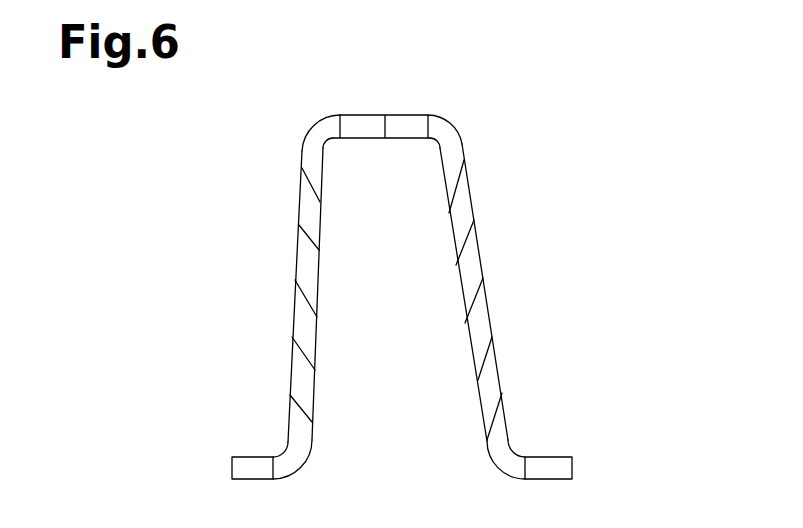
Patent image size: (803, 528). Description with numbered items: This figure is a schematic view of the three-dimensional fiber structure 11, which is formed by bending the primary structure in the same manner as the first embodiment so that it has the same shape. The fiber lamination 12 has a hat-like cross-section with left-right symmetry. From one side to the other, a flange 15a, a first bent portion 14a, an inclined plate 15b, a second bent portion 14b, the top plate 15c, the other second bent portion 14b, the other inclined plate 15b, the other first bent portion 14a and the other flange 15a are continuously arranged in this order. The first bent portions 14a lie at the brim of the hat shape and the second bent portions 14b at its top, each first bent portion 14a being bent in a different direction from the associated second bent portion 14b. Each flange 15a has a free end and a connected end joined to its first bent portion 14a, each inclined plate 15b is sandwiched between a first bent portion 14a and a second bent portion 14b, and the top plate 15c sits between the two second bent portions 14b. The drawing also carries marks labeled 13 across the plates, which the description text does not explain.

The three-dimensional fiber structure 11 is at (228, 130).
The fiber lamination 12 is at (294, 312).
The slit 13 is at (340, 130).
The first bent portion 14a is at (297, 458).
The second bent portion 14b is at (323, 131).
The flange 15a is at (237, 462).
The inclined plate 15b is at (318, 280).
The top plate 15c is at (355, 115).